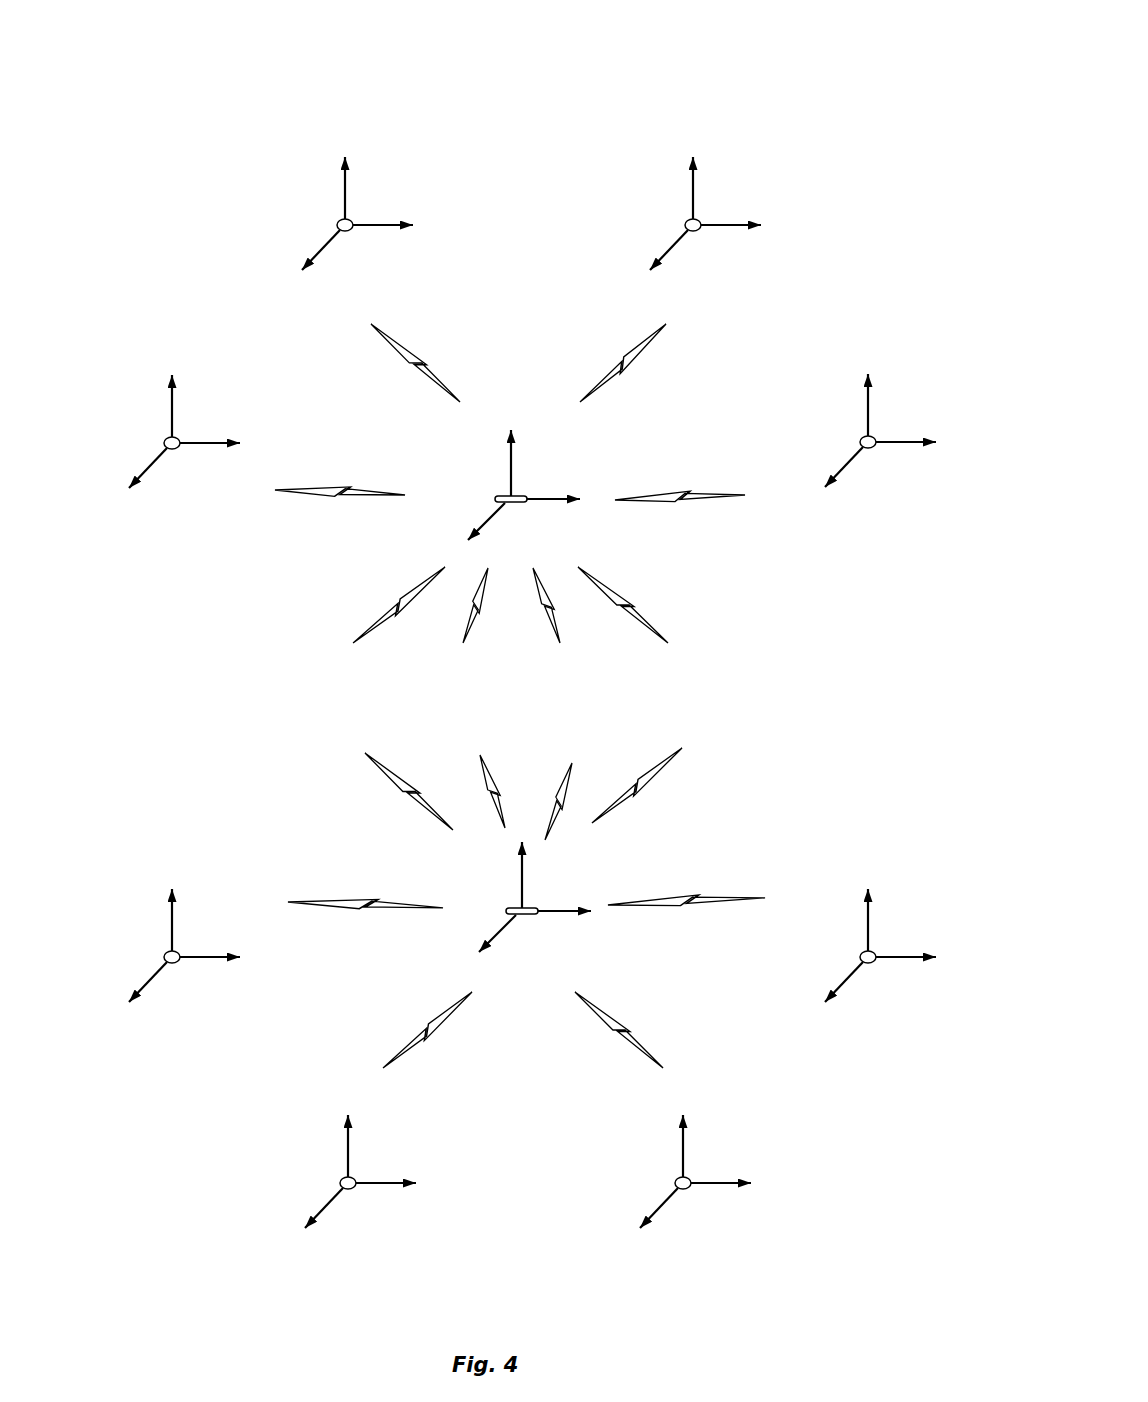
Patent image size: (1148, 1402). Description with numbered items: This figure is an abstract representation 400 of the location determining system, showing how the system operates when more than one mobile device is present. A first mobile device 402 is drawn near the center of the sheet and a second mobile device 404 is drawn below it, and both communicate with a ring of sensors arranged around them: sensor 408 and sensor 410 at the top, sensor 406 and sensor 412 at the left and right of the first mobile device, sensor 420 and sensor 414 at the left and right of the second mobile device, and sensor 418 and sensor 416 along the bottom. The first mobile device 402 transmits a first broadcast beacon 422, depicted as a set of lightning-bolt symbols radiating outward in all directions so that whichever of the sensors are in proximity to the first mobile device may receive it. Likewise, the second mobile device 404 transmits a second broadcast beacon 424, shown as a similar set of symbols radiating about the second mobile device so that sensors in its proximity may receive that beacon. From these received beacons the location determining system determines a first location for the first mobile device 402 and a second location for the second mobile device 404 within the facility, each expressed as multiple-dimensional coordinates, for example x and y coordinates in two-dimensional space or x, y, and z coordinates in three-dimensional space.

The abstract representation 400 is at (199, 73).
The first mobile device 402 is at (497, 496).
The second mobile device 404 is at (508, 909).
The sensor 406 is at (165, 438).
The sensor 408 is at (338, 220).
The sensor 410 is at (686, 220).
The sensor 412 is at (861, 437).
The sensor 414 is at (861, 952).
The sensor 416 is at (676, 1178).
The sensor 418 is at (341, 1178).
The sensor 420 is at (165, 952).
The first broadcast beacon 422 is at (418, 357).
The second broadcast beacon 424 is at (487, 795).